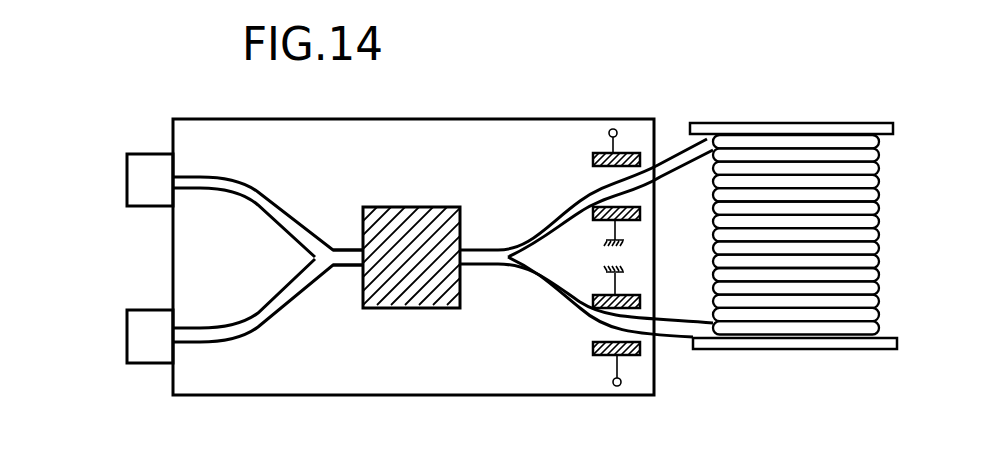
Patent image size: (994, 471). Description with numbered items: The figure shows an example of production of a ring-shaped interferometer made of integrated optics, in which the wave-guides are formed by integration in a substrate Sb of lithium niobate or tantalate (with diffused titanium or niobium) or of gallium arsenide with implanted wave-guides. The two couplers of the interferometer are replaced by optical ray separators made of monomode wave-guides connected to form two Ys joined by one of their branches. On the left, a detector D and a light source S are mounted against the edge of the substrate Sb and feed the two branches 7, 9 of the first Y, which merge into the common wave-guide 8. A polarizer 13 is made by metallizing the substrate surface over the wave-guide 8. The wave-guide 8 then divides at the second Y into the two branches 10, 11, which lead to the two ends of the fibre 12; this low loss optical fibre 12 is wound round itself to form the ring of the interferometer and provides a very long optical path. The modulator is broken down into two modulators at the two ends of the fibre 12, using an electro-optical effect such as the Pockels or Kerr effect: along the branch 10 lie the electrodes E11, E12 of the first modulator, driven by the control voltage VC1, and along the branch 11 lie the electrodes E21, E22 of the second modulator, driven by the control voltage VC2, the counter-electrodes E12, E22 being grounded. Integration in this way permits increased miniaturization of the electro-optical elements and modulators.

The integrated optics branch 7 is at (194, 177).
The wave-guide 8 is at (343, 258).
The integrated optics branch 9 is at (197, 337).
The integrated optics branch 10 is at (573, 202).
The integrated optics branch 11 is at (545, 291).
The fibre 12 is at (683, 163).
The polarizer 13 is at (422, 302).
The electrode E11 is at (593, 160).
The electrode E12 is at (593, 221).
The electrode E21 is at (652, 363).
The electrode E22 is at (583, 322).
The control voltage VC1 is at (589, 141).
The control voltage VC2 is at (592, 373).
The substrate Sb is at (472, 378).
The detector D is at (165, 144).
The light source S is at (165, 300).